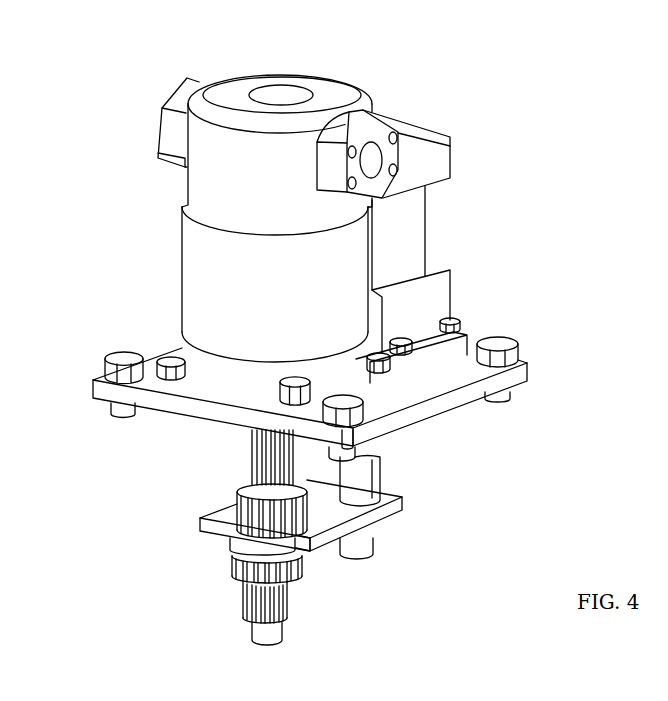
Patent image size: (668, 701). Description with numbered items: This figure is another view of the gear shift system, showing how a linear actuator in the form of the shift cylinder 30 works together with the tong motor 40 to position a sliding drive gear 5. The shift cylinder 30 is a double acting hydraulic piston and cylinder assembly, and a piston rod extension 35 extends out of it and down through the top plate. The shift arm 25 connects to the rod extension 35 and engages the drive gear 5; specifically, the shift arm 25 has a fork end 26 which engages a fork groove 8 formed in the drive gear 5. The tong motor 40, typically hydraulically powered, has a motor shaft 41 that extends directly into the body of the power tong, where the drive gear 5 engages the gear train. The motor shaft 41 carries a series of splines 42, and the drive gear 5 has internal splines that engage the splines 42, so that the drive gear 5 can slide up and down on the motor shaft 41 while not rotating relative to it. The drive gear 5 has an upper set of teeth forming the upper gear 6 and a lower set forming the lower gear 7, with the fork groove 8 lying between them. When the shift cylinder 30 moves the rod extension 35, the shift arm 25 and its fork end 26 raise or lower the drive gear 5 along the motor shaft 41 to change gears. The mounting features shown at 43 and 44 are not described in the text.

The drive gear 5 is at (250, 552).
The upper gear 6 is at (237, 507).
The lower gear 7 is at (238, 570).
The fork groove 8 is at (262, 545).
The shift arm 25 is at (402, 510).
The fork end 26 is at (303, 547).
The shift cylinder 30 is at (452, 157).
The piston rod extension 35 is at (382, 470).
The tong motor 40 is at (330, 80).
The motor shaft 41 is at (272, 637).
The splines 42 is at (287, 612).
The mounting bracket 43 is at (178, 82).
The connector flange 44 is at (371, 160).